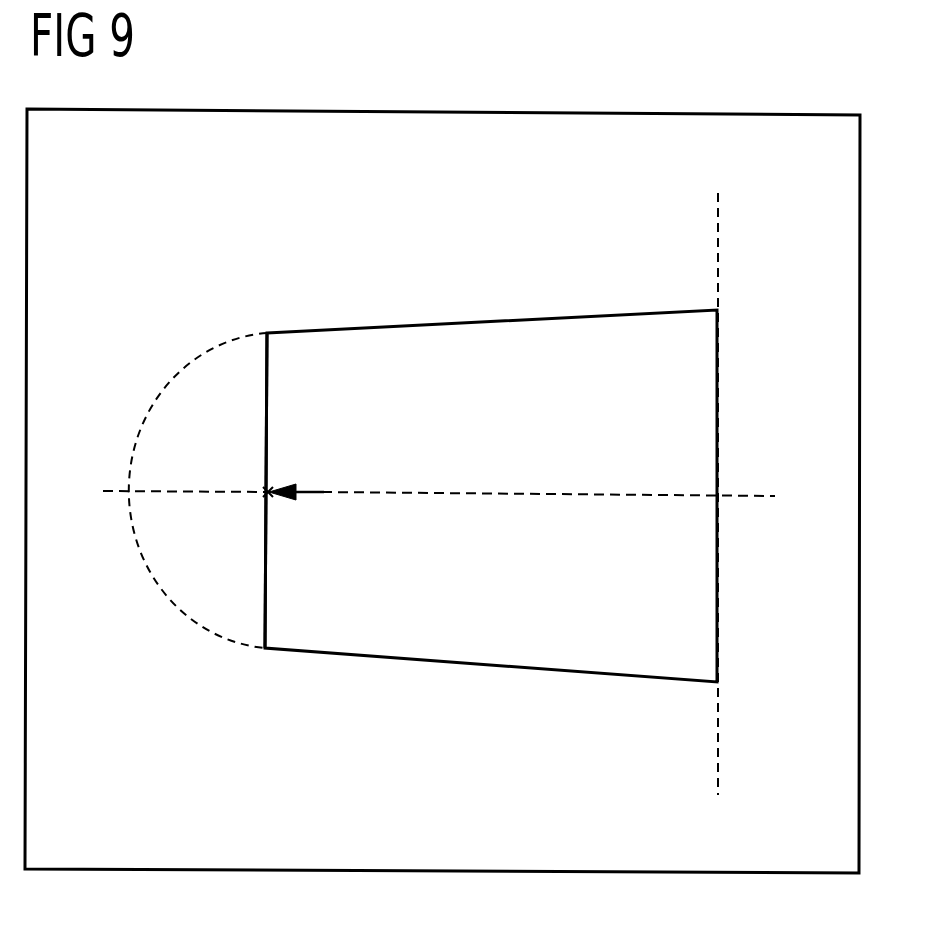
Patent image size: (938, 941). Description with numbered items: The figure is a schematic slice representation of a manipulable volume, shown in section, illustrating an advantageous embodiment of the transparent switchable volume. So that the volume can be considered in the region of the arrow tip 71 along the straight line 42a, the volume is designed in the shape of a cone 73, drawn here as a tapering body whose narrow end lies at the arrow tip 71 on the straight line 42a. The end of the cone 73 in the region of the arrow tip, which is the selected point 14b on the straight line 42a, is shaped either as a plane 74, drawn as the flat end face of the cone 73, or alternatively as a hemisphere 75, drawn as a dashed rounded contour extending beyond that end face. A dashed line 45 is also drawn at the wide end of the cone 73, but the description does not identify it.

The selected point 14b is at (264, 494).
The straight line 42a is at (757, 495).
The plane 45 is at (717, 237).
The arrow tip 71 is at (287, 496).
The cone 73 is at (510, 668).
The plane 74 is at (267, 422).
The hemisphere 75 is at (157, 592).